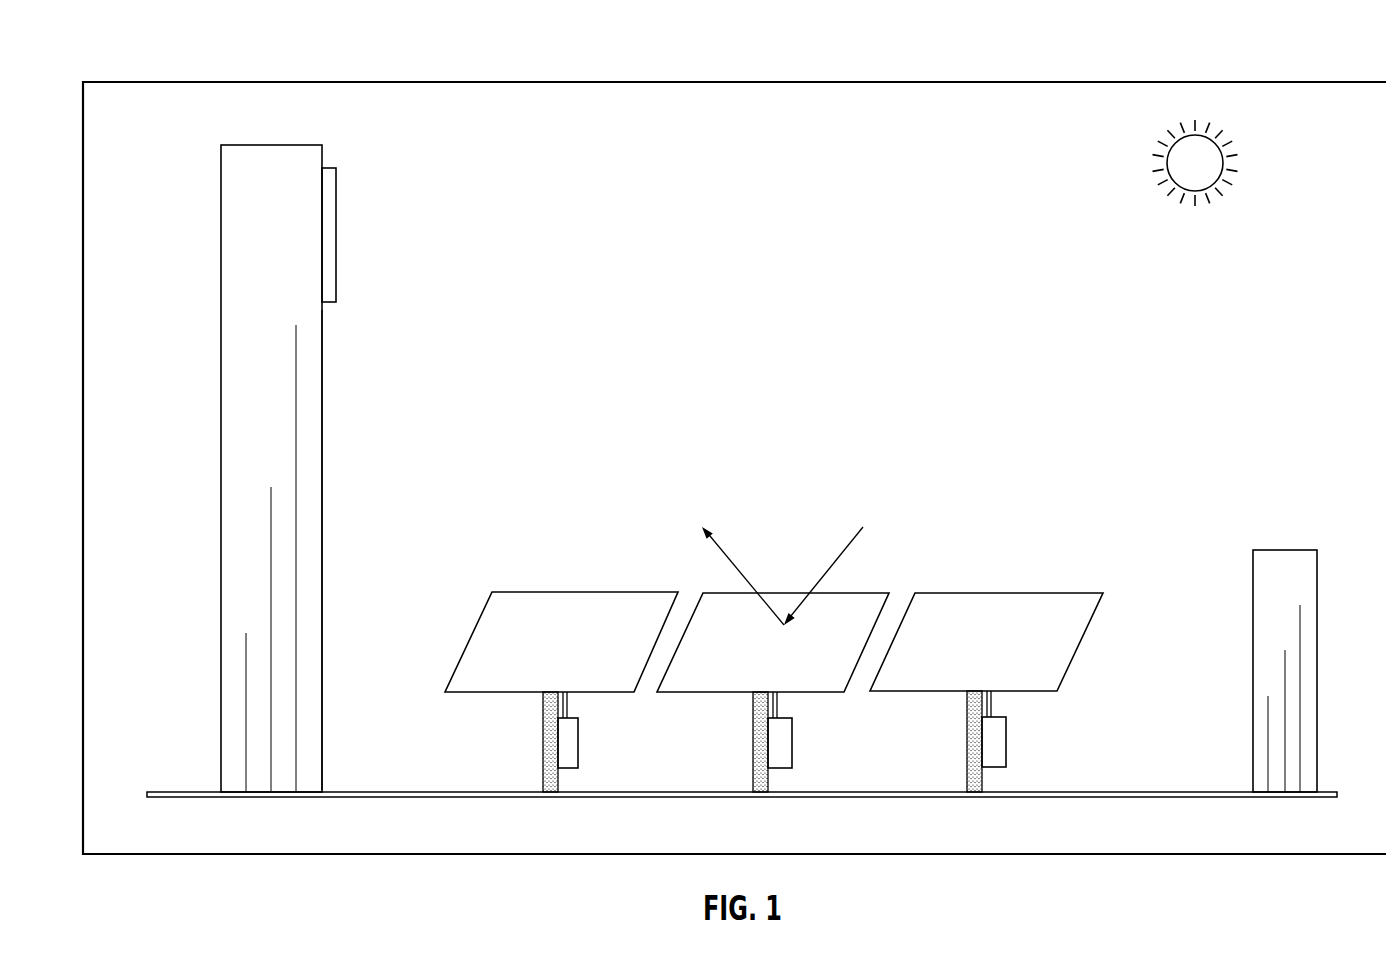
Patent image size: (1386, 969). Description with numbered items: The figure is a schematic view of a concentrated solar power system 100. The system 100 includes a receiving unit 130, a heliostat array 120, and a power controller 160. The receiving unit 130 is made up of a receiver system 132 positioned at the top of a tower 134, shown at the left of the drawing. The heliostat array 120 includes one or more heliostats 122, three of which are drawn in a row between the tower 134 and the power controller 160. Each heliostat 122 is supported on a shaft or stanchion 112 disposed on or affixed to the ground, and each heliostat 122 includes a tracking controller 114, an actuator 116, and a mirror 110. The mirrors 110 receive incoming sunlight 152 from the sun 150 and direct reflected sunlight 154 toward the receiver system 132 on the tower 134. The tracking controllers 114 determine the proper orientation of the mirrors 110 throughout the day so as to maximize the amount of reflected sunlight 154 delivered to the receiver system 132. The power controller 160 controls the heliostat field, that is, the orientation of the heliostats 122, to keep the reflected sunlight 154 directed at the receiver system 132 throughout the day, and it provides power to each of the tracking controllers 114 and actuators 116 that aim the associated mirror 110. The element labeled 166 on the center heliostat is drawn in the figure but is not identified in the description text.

The concentrated solar power system 100 is at (138, 53).
The mirror 110 is at (574, 655).
The stanchion 112 is at (553, 783).
The tracking controller 114 is at (578, 745).
The actuator 116 is at (569, 702).
The heliostat array 120 is at (783, 529).
The heliostat 122 is at (811, 680).
The receiving unit 130 is at (234, 116).
The receiver system 132 is at (336, 236).
The tower 134 is at (322, 470).
The sun 150 is at (1128, 154).
The incoming sunlight 152 is at (843, 550).
The reflected sunlight 154 is at (722, 550).
The power controller 160 is at (1284, 550).
The cable 166 is at (779, 702).